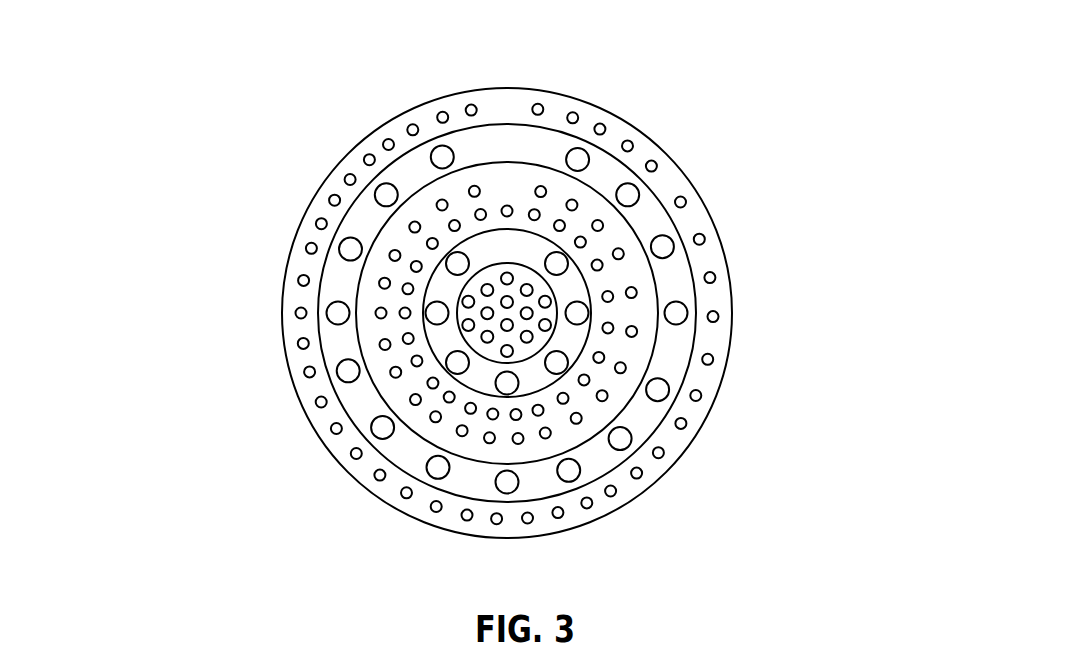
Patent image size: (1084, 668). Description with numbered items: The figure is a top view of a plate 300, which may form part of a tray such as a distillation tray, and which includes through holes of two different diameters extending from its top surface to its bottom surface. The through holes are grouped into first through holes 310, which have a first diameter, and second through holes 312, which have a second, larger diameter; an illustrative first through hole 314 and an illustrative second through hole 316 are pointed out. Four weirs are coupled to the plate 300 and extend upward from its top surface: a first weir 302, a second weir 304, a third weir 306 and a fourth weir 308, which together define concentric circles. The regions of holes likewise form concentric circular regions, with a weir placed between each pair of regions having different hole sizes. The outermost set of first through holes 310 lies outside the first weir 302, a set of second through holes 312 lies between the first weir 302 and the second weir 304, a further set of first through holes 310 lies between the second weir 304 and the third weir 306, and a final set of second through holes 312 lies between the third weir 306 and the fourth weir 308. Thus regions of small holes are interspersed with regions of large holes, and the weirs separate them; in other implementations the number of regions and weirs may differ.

The plate 300 is at (463, 269).
The first weir 302 is at (648, 188).
The second weir 304 is at (533, 163).
The third weir 306 is at (593, 293).
The fourth weir 308 is at (555, 337).
The first through holes 310 is at (523, 118).
The second through holes 312 is at (523, 153).
The first through hole 314 is at (383, 138).
The second through hole 316 is at (437, 144).